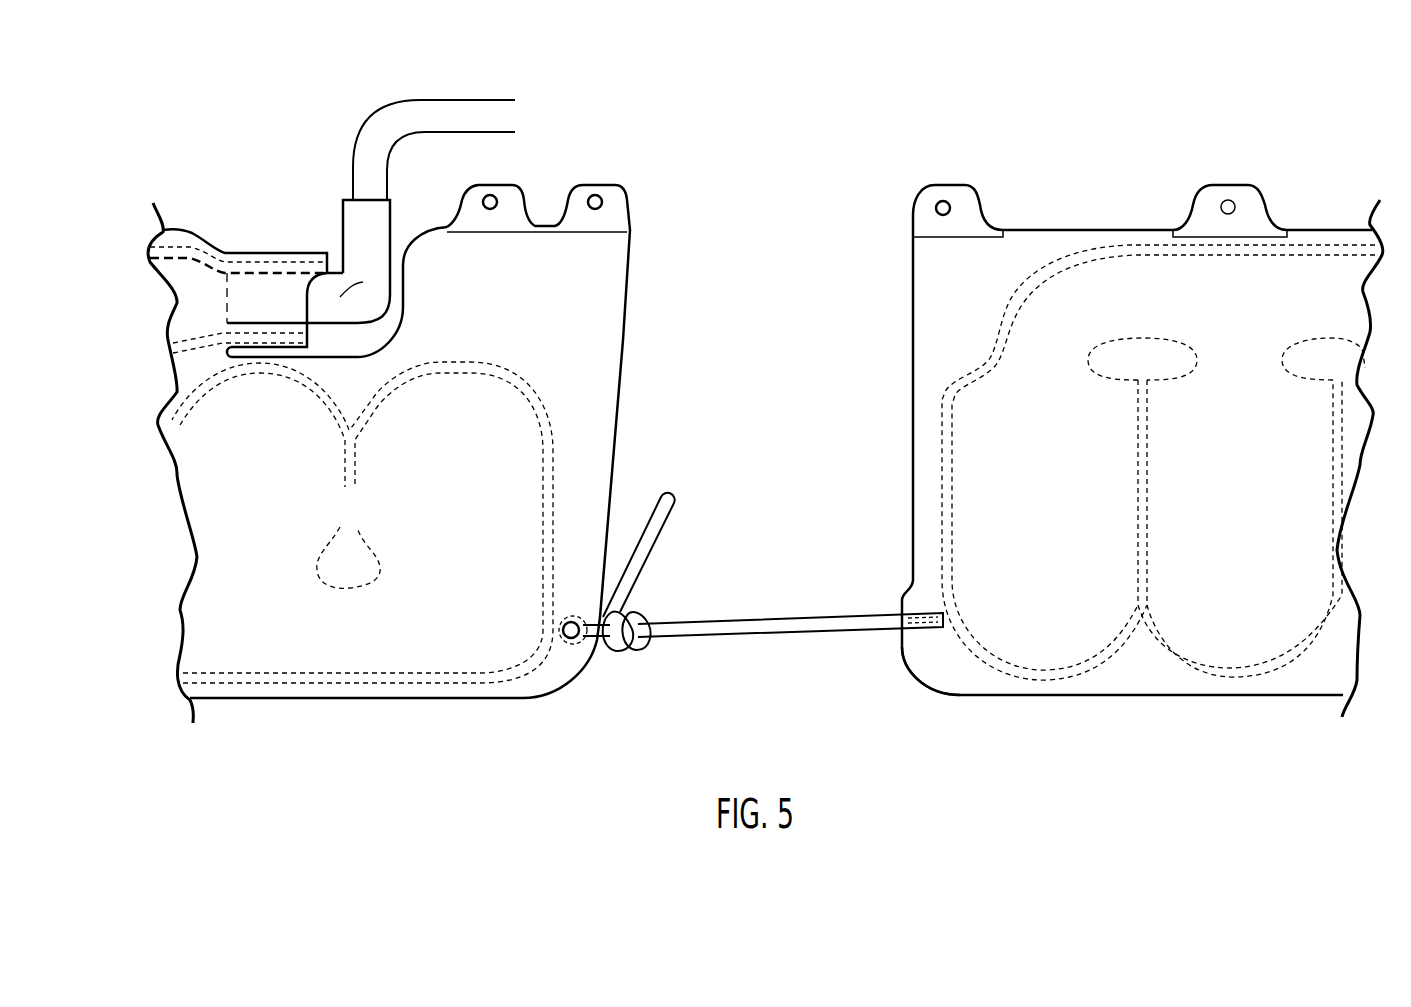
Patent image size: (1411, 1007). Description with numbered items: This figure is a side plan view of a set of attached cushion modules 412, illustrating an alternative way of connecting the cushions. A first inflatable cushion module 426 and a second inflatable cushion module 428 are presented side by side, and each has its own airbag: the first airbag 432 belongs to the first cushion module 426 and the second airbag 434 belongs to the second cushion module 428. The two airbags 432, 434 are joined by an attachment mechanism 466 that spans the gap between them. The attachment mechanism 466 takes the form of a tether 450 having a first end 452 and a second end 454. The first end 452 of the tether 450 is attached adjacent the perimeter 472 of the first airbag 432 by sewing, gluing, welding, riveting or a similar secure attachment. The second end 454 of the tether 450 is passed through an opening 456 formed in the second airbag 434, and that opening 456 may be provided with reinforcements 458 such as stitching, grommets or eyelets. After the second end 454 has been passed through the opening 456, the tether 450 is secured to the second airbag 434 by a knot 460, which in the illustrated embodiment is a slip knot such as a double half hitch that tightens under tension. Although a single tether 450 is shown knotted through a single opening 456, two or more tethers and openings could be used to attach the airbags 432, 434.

The set of attached cushion modules 412 is at (810, 186).
The first inflatable cushion module 426 is at (1290, 275).
The second inflatable cushion module 428 is at (253, 468).
The first airbag 432 is at (1162, 516).
The second airbag 434 is at (364, 519).
The tether 450 is at (775, 620).
The first end 452 is at (930, 610).
The second end 454 is at (668, 525).
The opening 456 is at (581, 617).
The reinforcements 458 is at (563, 633).
The knot 460 is at (600, 677).
The attachment mechanism 466 is at (751, 655).
The perimeter 472 is at (923, 667).